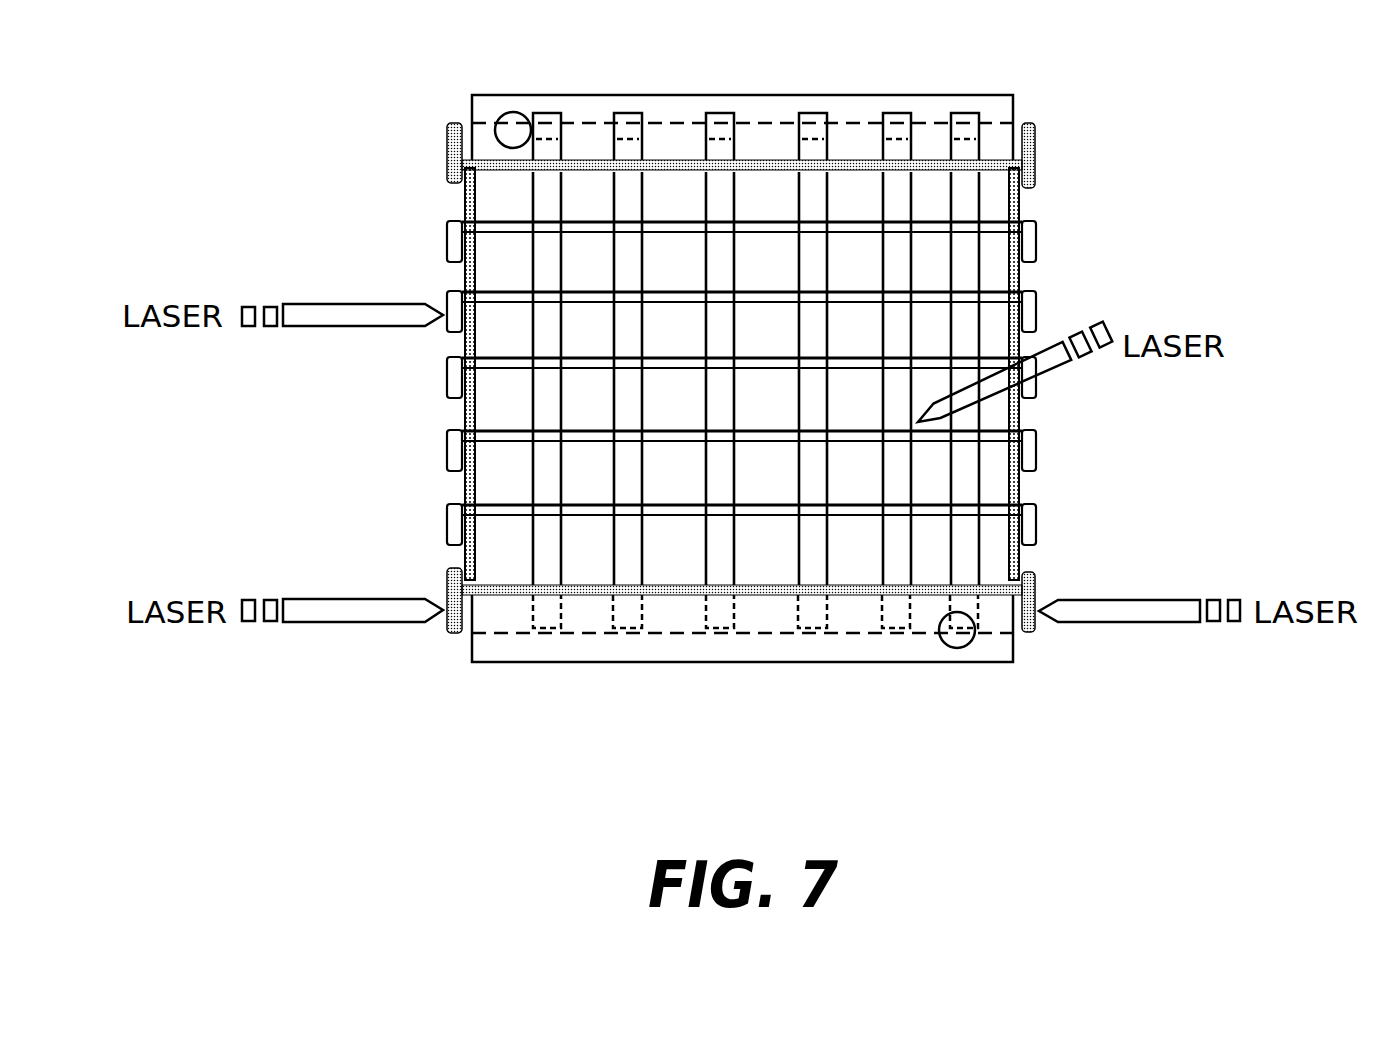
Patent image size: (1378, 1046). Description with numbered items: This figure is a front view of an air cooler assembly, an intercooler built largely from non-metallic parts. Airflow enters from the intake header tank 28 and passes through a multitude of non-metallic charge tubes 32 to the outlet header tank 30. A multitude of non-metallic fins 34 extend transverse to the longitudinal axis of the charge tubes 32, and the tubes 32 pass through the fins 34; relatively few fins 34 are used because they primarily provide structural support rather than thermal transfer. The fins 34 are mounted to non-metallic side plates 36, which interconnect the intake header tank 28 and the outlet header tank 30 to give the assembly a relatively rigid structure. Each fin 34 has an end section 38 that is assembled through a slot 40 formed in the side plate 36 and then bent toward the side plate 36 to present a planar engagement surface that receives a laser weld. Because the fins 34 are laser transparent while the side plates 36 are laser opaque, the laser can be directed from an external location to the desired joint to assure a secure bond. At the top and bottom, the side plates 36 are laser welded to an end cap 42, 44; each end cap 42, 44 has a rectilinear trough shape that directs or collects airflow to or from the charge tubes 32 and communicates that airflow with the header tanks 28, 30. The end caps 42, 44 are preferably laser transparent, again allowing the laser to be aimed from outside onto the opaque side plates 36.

The intake header tank 28 is at (792, 643).
The outlet header tank 30 is at (800, 108).
The non-metallic charge tubes 32 is at (905, 192).
The non-metallic fins 34 is at (502, 365).
The side plates 36 is at (460, 205).
The end section 38 is at (1036, 237).
The slot 40 is at (1000, 252).
The end cap 42 is at (613, 597).
The end cap 44 is at (572, 160).